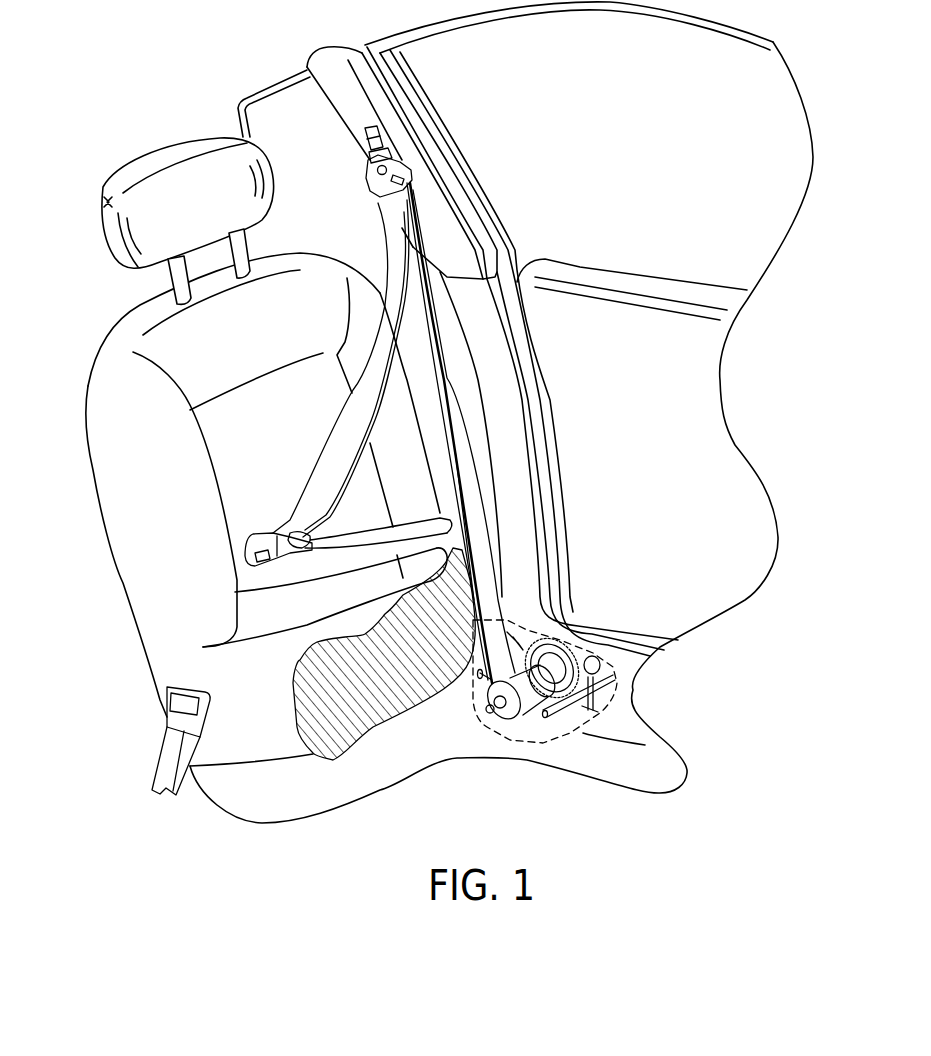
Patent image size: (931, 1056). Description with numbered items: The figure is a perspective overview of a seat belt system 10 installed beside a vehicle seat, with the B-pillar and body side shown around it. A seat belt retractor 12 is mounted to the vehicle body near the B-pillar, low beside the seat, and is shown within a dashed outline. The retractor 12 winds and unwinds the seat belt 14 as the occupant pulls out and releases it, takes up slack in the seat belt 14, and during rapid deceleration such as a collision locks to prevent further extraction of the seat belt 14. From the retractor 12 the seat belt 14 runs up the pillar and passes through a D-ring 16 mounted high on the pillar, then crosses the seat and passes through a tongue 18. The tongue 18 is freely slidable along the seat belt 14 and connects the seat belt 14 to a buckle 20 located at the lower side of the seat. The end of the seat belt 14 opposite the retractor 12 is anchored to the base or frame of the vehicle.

The seat belt system 10 is at (463, 443).
The seat belt retractor 12 is at (622, 698).
The seat belt 14 is at (490, 597).
The D-ring 16 is at (397, 165).
The tongue 18 is at (267, 573).
The buckle 20 is at (170, 723).